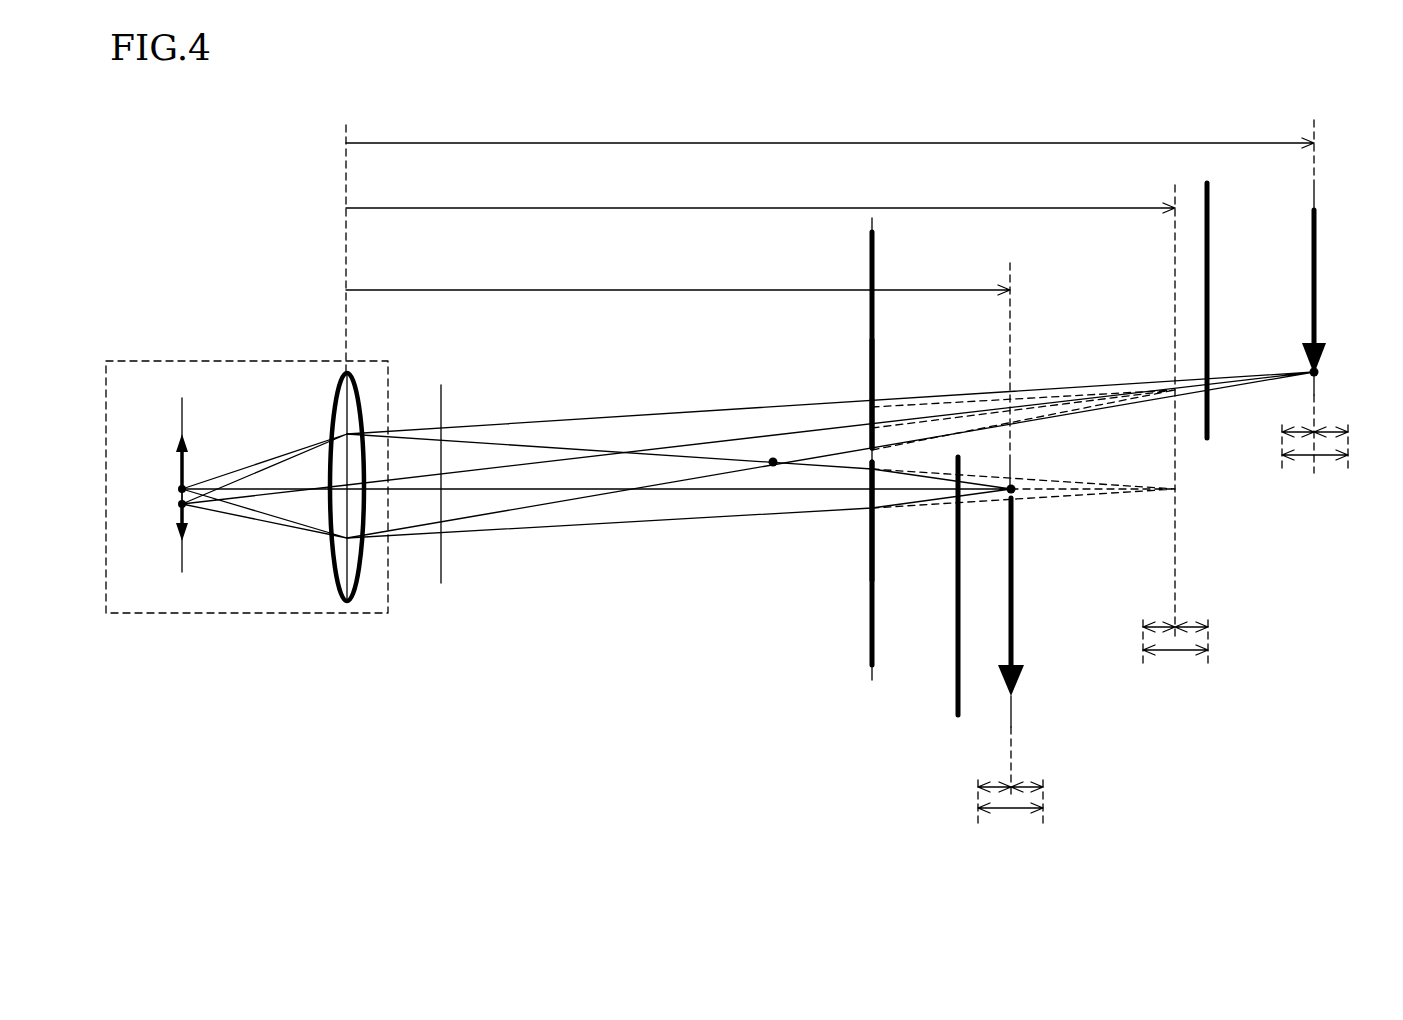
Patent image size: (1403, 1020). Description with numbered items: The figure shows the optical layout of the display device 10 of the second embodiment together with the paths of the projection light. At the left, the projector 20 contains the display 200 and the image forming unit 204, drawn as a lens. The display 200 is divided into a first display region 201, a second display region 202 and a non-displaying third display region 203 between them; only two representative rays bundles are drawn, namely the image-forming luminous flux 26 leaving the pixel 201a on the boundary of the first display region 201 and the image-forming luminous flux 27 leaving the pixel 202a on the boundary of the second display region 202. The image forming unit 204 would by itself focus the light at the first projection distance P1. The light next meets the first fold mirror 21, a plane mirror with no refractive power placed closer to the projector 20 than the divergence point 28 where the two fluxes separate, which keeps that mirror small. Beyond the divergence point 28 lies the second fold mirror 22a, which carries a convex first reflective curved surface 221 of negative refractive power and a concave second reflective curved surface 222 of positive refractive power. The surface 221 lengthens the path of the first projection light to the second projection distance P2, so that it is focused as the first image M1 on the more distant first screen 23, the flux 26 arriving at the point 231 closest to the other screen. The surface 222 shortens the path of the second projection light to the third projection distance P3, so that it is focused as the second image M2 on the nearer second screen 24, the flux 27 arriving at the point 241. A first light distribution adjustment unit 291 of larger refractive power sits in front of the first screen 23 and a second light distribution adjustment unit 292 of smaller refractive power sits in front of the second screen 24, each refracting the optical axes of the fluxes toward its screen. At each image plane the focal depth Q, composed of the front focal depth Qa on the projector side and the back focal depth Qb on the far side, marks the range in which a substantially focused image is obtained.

The display device 10 is at (224, 242).
The projector 20 is at (206, 358).
The display 200 is at (176, 406).
The first display region 201 is at (175, 541).
The second display region 202 is at (175, 487).
The third display region 203 is at (175, 504).
The pixel 201a is at (187, 507).
The pixel 202a is at (183, 487).
The image forming unit 204 is at (333, 567).
The first fold mirror 21 is at (441, 383).
The second fold mirror 22a is at (857, 252).
The first reflective curved surface 221 is at (872, 362).
The second reflective curved surface 222 is at (870, 573).
The first screen 23 is at (1302, 194).
The point 231 is at (1310, 375).
The second screen 24 is at (1003, 731).
The point 241 is at (1015, 490).
The image-forming luminous flux 26 is at (949, 387).
The image-forming luminous flux 27 is at (778, 511).
The divergence point 28 is at (770, 462).
The first light distribution adjustment unit 291 is at (1207, 310).
The second light distribution adjustment unit 292 is at (958, 585).
The first image M1 is at (1312, 324).
The second image M2 is at (1013, 550).
The first projection distance P1 is at (760, 195).
The second projection distance P2 is at (830, 130).
The third projection distance P3 is at (678, 277).
The focal depth Q is at (1314, 457).
The front focal depth Qa is at (1297, 431).
The back focal depth Qb is at (1332, 431).